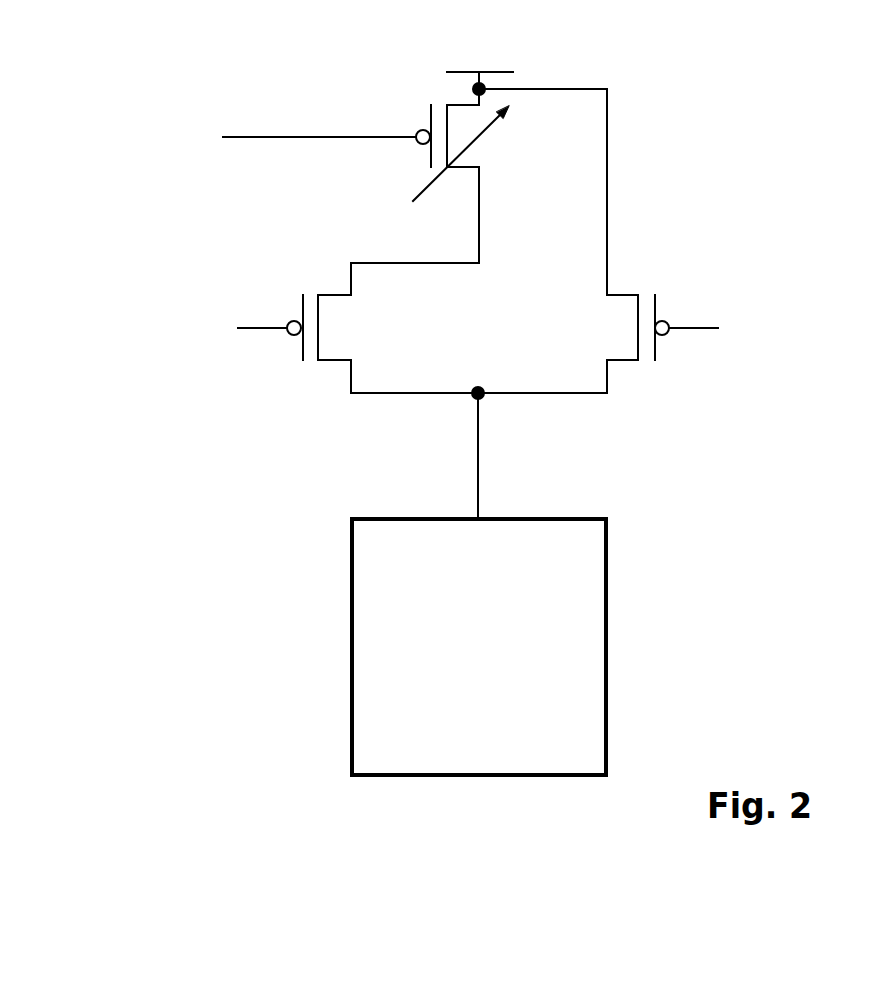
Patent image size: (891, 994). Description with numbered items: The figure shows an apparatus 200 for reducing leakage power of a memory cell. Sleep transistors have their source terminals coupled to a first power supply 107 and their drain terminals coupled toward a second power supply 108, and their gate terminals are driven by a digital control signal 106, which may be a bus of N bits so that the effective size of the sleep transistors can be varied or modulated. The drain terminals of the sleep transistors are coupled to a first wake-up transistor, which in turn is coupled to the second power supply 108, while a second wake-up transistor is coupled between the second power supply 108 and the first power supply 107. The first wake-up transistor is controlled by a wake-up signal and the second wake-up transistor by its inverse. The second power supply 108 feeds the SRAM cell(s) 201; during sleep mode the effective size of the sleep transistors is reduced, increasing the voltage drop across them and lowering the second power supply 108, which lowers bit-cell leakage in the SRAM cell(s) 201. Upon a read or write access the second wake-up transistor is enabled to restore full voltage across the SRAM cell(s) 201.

The apparatus 200 is at (85, 84).
The control signal 106 is at (326, 135).
The first power supply 107 is at (607, 89).
The second power supply 108 is at (478, 483).
The SRAM cell(s) 201 is at (479, 647).